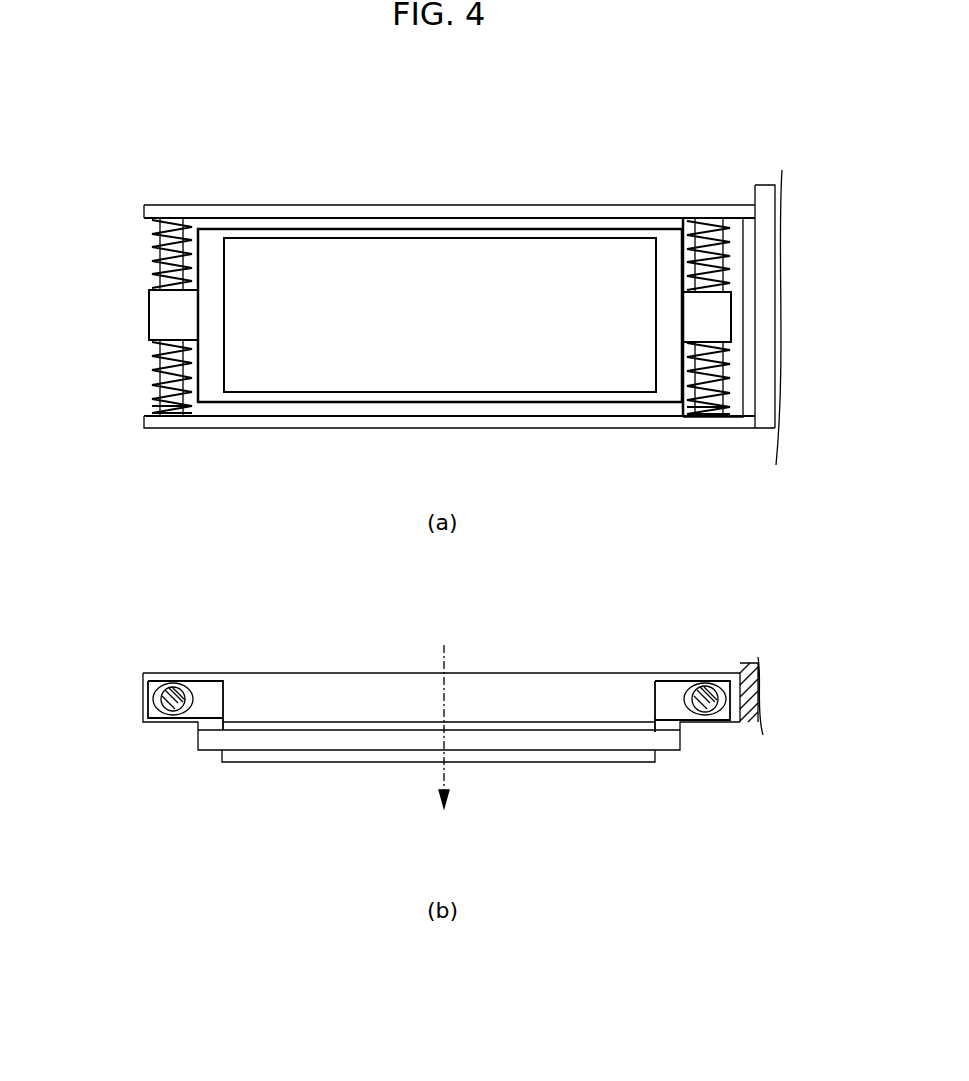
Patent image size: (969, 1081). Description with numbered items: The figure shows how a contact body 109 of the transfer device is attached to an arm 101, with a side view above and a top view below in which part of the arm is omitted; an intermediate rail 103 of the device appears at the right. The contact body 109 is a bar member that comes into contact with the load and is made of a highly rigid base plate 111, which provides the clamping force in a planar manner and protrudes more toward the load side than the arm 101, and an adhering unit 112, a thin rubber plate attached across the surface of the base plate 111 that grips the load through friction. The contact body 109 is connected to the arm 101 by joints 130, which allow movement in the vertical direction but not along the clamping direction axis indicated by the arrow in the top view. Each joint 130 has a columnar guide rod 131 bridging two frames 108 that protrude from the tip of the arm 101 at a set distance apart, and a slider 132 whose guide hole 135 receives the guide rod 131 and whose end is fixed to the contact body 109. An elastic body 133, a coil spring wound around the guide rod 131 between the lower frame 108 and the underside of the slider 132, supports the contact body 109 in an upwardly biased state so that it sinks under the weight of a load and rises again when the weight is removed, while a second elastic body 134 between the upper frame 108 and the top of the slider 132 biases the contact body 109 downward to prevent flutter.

The arm 101 is at (598, 205).
The intermediate rail 103 is at (778, 172).
The frame 108 is at (365, 205).
The contact body 109 is at (451, 332).
The base plate 111 is at (540, 229).
The adhering unit 112 is at (530, 372).
The joint 130 is at (180, 218).
The guide rod 131 is at (187, 428).
The slider 132 is at (165, 312).
The elastic body 133 is at (155, 380).
The second elastic body 134 is at (155, 258).
The guide hole 135 is at (173, 672).